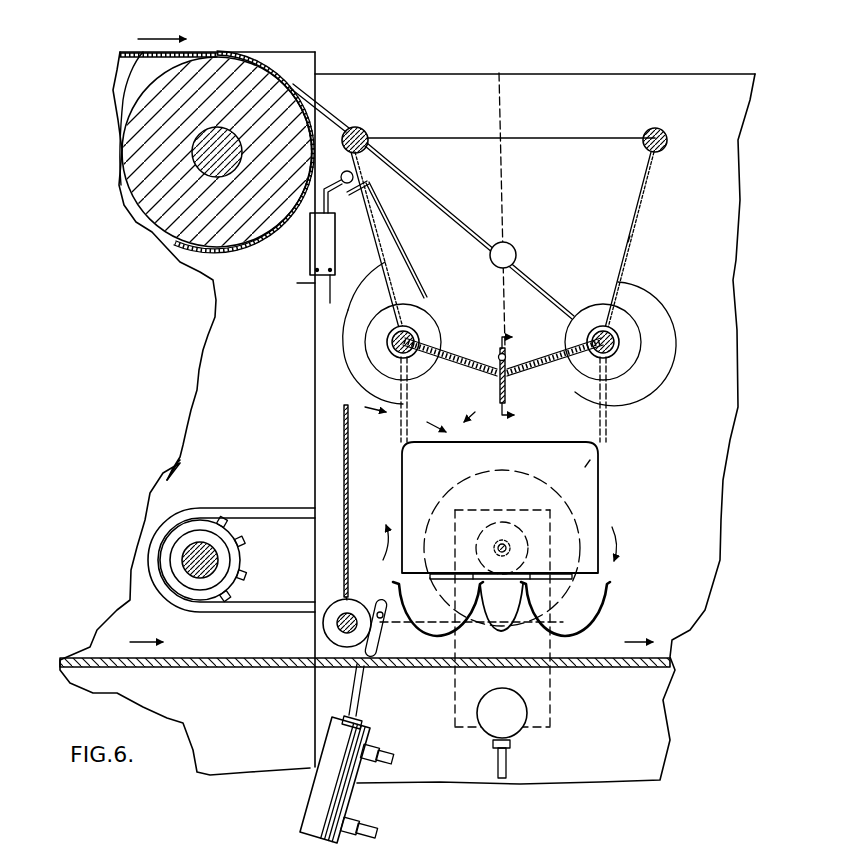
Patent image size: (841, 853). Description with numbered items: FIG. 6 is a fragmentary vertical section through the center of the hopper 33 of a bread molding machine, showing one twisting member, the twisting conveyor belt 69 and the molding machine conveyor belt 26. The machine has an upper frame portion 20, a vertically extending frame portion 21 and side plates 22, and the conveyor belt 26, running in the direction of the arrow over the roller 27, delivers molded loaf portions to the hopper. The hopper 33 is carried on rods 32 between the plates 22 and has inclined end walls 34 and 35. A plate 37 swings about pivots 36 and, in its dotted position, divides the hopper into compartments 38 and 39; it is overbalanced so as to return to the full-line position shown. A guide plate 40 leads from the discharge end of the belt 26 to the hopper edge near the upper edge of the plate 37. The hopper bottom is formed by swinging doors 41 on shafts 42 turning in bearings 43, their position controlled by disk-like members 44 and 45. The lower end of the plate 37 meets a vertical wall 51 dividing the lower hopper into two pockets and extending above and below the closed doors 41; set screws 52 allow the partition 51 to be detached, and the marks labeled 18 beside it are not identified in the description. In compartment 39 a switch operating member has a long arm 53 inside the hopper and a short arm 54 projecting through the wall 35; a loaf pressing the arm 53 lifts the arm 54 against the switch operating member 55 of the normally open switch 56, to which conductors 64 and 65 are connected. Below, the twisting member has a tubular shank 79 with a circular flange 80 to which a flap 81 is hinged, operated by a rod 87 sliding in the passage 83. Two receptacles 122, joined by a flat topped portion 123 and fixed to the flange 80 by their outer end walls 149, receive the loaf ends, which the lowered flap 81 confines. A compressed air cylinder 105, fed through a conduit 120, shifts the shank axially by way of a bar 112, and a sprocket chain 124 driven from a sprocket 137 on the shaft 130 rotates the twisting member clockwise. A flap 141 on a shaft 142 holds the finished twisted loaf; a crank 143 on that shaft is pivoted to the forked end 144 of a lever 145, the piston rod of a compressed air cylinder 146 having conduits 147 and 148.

The sheet spacing dimension 18 is at (522, 374).
The upper frame portion 20 is at (248, 50).
The vertically extending frame portion 21 is at (213, 432).
The side plates 22 is at (712, 457).
The conveyor belt 26 is at (123, 85).
The roller 27 is at (145, 136).
The rods 32 is at (365, 123).
The hopper 33 is at (573, 157).
The inclined end wall 34 is at (628, 242).
The inclined end wall 35 is at (383, 265).
The pivots 36 is at (523, 248).
The plate 37 is at (450, 203).
The compartment 38 is at (603, 207).
The compartment 39 is at (415, 222).
The guide plate 40 is at (323, 103).
The bottom closure members or doors 41 is at (468, 368).
The shafts 42 is at (617, 335).
The bearings 43 is at (618, 348).
The disk-like member 44 is at (657, 308).
The disk-like member 45 is at (348, 338).
The vertical wall 51 is at (506, 385).
The set screws 52 is at (498, 354).
The long arm 53 is at (410, 260).
The short arm 54 is at (361, 196).
The switch operating member 55 is at (343, 173).
The switch 56 is at (320, 237).
The conductor 64 is at (307, 285).
The conductor 65 is at (317, 307).
The conveyor belt 69 is at (592, 665).
The tubular shank portion 79 is at (570, 527).
The upstanding circular wall 80 is at (565, 503).
The flap 81 is at (585, 467).
The passage 83 is at (508, 542).
The rod 87 is at (497, 543).
The compressed air cylinder 105 is at (515, 718).
The bar 112 is at (543, 690).
The conduit 120 is at (508, 767).
The cup members or trough portions 122 is at (593, 618).
The flat topped portion 123 is at (502, 588).
The sprocket chain 124 is at (273, 510).
The shaft 130 is at (199, 547).
The sprocket 137 is at (242, 557).
The flap of sheet material 141 is at (344, 435).
The shaft 142 is at (340, 630).
The crank 143 is at (368, 610).
The forked end 144 is at (378, 640).
The lever 145 is at (362, 709).
The compressed air cylinder 146 is at (337, 783).
The conduit 147 is at (365, 821).
The conduit 148 is at (386, 750).
The outer end walls 149 is at (423, 598).